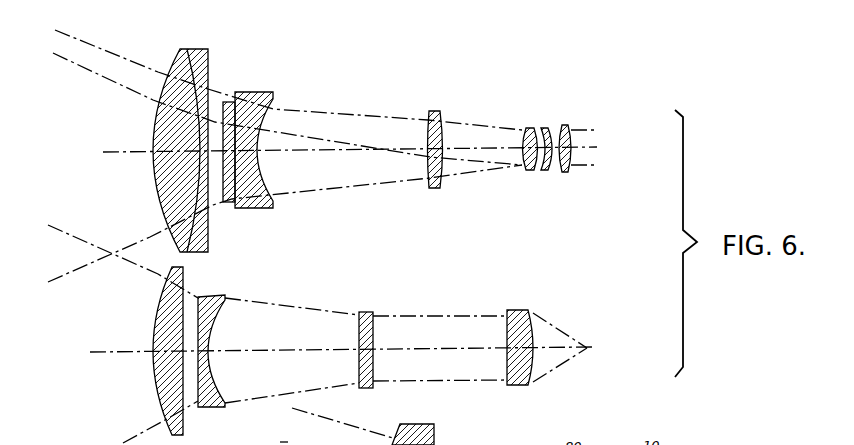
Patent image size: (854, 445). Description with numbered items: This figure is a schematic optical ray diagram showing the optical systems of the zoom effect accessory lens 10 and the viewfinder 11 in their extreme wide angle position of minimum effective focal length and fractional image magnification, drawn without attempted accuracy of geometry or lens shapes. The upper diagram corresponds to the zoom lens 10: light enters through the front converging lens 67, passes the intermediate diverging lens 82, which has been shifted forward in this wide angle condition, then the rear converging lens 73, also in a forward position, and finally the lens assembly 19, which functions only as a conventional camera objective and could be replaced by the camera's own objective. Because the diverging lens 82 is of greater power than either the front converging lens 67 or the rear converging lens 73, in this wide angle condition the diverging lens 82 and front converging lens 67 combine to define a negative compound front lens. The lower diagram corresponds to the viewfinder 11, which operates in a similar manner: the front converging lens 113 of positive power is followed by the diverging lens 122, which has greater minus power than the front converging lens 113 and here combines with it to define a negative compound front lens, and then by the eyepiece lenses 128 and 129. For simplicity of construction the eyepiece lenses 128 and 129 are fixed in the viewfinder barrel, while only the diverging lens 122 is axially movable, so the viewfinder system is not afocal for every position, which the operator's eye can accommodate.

The zoom effect accessory lens 10 is at (395, 90).
The front converging lens 67 is at (162, 128).
The diverging lens 82 is at (271, 96).
The rear converging lens 73 is at (437, 112).
The lens assembly 19 is at (549, 124).
The viewfinder 11 is at (409, 300).
The front converging lens 113 is at (165, 392).
The diverging lens 122 is at (222, 298).
The eyepiece lens 129 is at (366, 312).
The eyepiece lens 128 is at (514, 311).